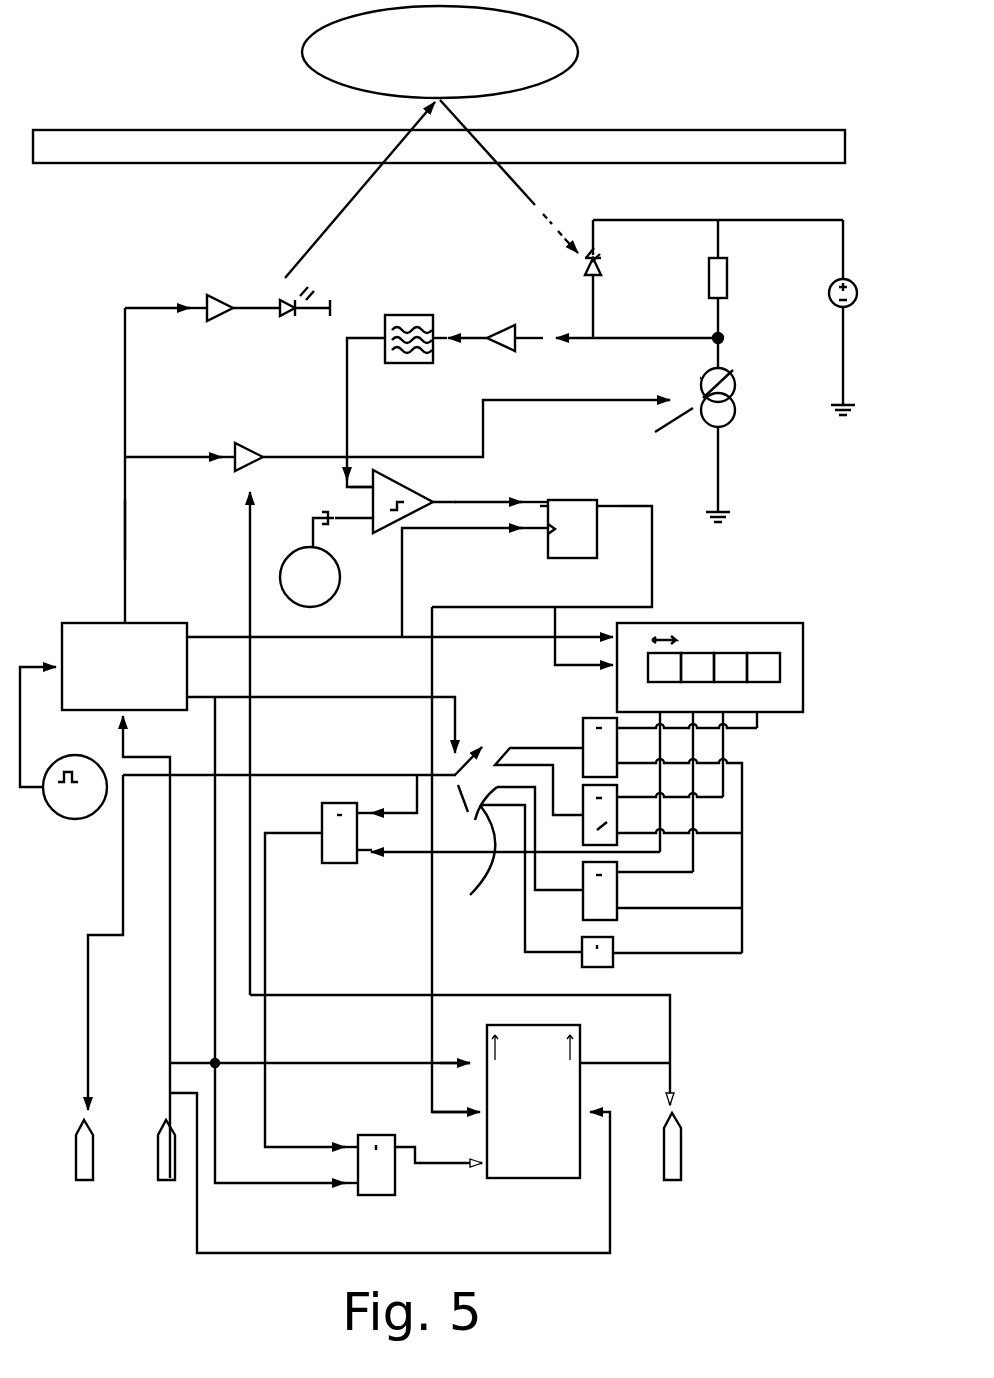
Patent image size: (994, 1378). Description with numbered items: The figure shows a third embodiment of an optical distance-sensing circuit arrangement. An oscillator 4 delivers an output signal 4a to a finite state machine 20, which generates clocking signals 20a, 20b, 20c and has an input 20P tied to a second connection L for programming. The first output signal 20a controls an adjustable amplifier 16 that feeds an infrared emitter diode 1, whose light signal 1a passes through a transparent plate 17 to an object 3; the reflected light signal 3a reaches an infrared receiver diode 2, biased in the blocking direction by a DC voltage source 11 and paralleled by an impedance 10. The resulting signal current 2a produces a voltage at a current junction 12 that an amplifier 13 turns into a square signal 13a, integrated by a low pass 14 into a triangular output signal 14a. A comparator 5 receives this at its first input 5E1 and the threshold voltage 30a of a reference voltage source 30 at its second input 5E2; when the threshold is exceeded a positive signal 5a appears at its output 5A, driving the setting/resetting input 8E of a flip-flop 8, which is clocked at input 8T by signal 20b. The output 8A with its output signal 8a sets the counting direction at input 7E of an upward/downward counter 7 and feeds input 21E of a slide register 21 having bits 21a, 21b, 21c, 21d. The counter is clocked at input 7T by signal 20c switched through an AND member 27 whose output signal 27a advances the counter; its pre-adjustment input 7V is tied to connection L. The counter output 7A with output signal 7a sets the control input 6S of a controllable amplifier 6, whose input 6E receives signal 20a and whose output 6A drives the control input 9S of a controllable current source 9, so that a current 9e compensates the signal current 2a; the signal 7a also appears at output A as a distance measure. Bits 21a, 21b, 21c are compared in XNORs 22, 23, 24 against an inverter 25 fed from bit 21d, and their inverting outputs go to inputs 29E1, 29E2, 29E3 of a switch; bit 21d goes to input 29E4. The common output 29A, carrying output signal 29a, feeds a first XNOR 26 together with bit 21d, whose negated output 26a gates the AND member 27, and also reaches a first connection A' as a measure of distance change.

The infrared emitter diode 1 is at (284, 316).
The light signal 1a is at (305, 240).
The infrared receiver diode 2 is at (605, 268).
The signal current 2a is at (597, 320).
The object 3 is at (580, 58).
The reflected light signal 3a is at (550, 220).
The oscillator 4 is at (72, 820).
The output signal of the oscillator 4a is at (22, 712).
The comparator 5 is at (433, 478).
The first input of the comparator 5E1 is at (378, 482).
The second input of the comparator 5E2 is at (365, 522).
The output of the comparator 5A is at (440, 498).
The positive signal 5a is at (498, 498).
The controllable amplifier 6 is at (248, 442).
The input of the controllable amplifier 6E is at (232, 448).
The output of the controllable amplifier 6A is at (270, 458).
The control input of the controllable amplifier 6S is at (238, 470).
The upward/downward counter 7 is at (582, 1085).
The pre-adjustment input 7V is at (480, 1062).
The counting device input 7E is at (485, 1112).
The clocking signal input of the counter 7T is at (485, 1163).
The output of the upward/downward counter 7A is at (580, 1063).
The output signal of the upward/downward counter 7a is at (676, 1050).
The flip-flop 8 is at (575, 500).
The setting/resetting input of the flip-flop 8E is at (550, 503).
The clocking input of the flip-flop 8T is at (545, 533).
The output of the flip-flop 8A is at (600, 508).
The output signal of the flip-flop 8a is at (636, 505).
The controllable current source 9 is at (735, 415).
The current 9e is at (735, 378).
The control input of the controllable current source 9S is at (659, 428).
The impedance 10 is at (730, 290).
The DC voltage source 11 is at (830, 300).
The current junction 12 is at (726, 342).
The amplifier 13 is at (512, 330).
The square signal 13a is at (463, 338).
The low pass 14 is at (412, 314).
The output signal of the low pass 14a is at (348, 340).
The adjustable amplifier 16 is at (210, 320).
The plate 17 is at (245, 128).
The finite state machine 20 is at (100, 620).
The first output signal of the FSM 20a is at (122, 545).
The second output signal of the FSM 20b is at (310, 634).
The third output signal of the FSM 20c is at (365, 700).
The input of the FSM 20P is at (128, 710).
The slide register 21 is at (803, 672).
The first bit of the slide register 21a is at (762, 656).
The second bit of the slide register 21b is at (740, 650).
The third bit of the slide register 21c is at (695, 650).
The last bit of the slide register 21d is at (652, 650).
The input of the slide register 21E is at (595, 665).
The second XNOR member 22 is at (586, 722).
The third XNOR member 23 is at (582, 825).
The fourth XNOR member 24 is at (620, 905).
The inverter 25 is at (615, 950).
The first XNOR member 26 is at (322, 858).
The output of the first XNOR member 26a is at (318, 832).
The AND member 27 is at (365, 1135).
The output signal of the AND member 27a is at (410, 1148).
The output signal of the switch 29a is at (400, 774).
The common output of the switch 29A is at (509, 850).
The first input of the switch 29E1 is at (487, 741).
The second input of the switch 29E2 is at (487, 728).
The third input of the switch 29E3 is at (508, 876).
The fourth input of the switch 29E4 is at (425, 826).
The reference voltage source 30 is at (282, 580).
The threshold voltage 30a is at (327, 518).
The output A is at (654, 1146).
The first connection A' is at (61, 1133).
The second connection L is at (158, 1130).